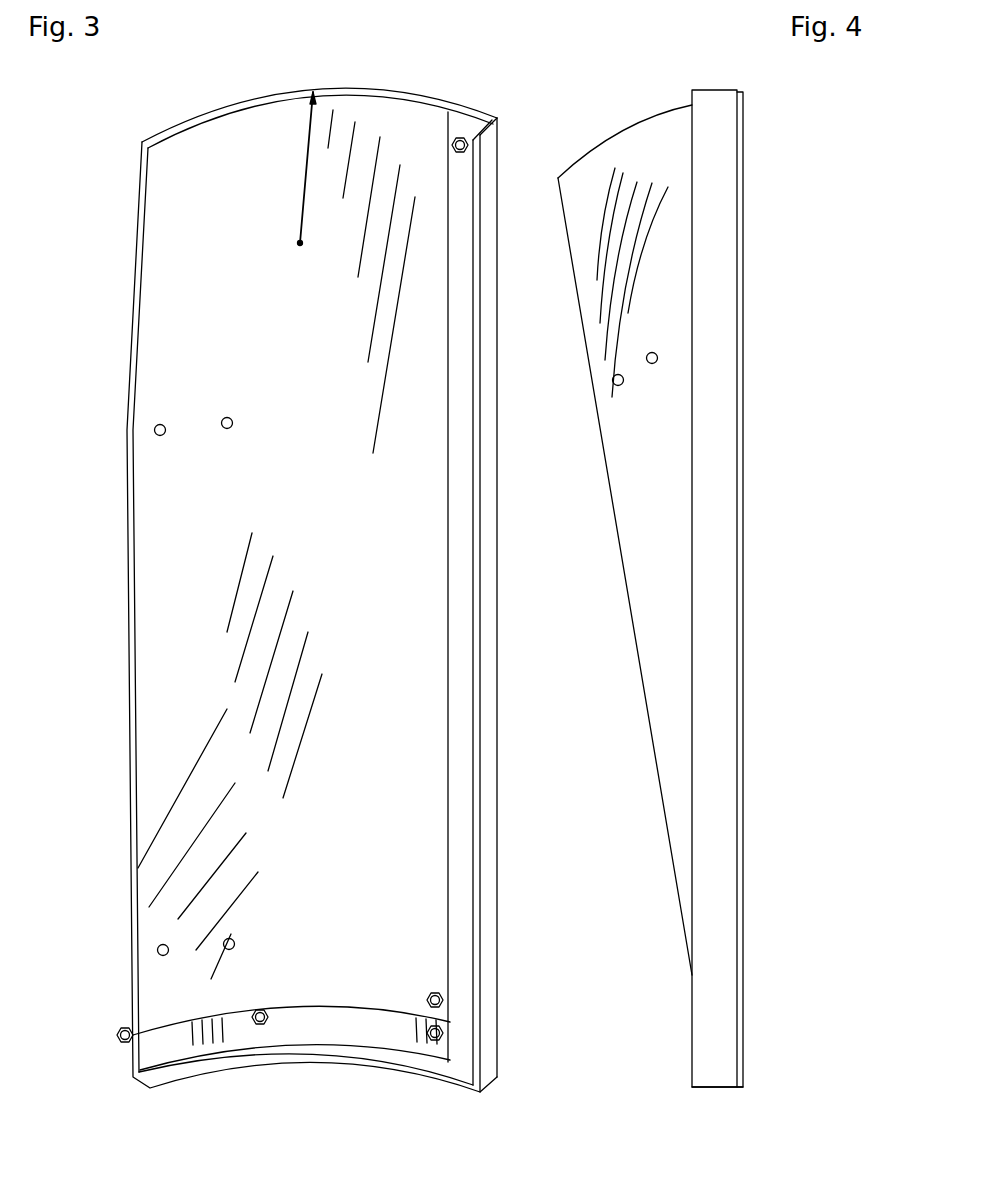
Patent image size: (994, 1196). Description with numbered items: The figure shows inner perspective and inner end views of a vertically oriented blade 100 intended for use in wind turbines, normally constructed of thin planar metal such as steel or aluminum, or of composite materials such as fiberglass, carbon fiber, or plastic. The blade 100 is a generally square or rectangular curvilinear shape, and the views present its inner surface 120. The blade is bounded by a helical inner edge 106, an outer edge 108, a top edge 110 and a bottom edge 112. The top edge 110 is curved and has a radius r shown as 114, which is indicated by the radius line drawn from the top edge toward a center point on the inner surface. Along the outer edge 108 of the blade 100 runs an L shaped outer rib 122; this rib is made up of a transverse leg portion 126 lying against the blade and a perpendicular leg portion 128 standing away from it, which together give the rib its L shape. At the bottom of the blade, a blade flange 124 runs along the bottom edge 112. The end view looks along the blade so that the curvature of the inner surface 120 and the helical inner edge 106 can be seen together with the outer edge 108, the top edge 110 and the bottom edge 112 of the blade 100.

In FIG. 3, the blade 100 is at (504, 920).
In FIG. 4, the blade 100 is at (652, 830).
In FIG. 3, the helical inner edge 106 is at (130, 742).
In FIG. 4, the helical inner edge 106 is at (640, 645).
In FIG. 4, the outer edge 108 is at (740, 320).
In FIG. 3, the top edge 110 is at (208, 110).
In FIG. 4, the top edge 110 is at (660, 112).
In FIG. 4, the bottom edge 112 is at (735, 1090).
In FIG. 3, the radius r 114 is at (283, 205).
In FIG. 3, the inner surface 120 is at (165, 513).
In FIG. 4, the inner surface 120 is at (640, 535).
In FIG. 3, the L shaped outer rib 122 is at (483, 698).
In FIG. 3, the blade flange 124 is at (300, 1050).
In FIG. 3, the transverse leg portion 126 is at (462, 110).
In FIG. 3, the perpendicular leg portion 128 is at (495, 130).
In FIG. 4, the perpendicular leg portion 128 is at (720, 622).